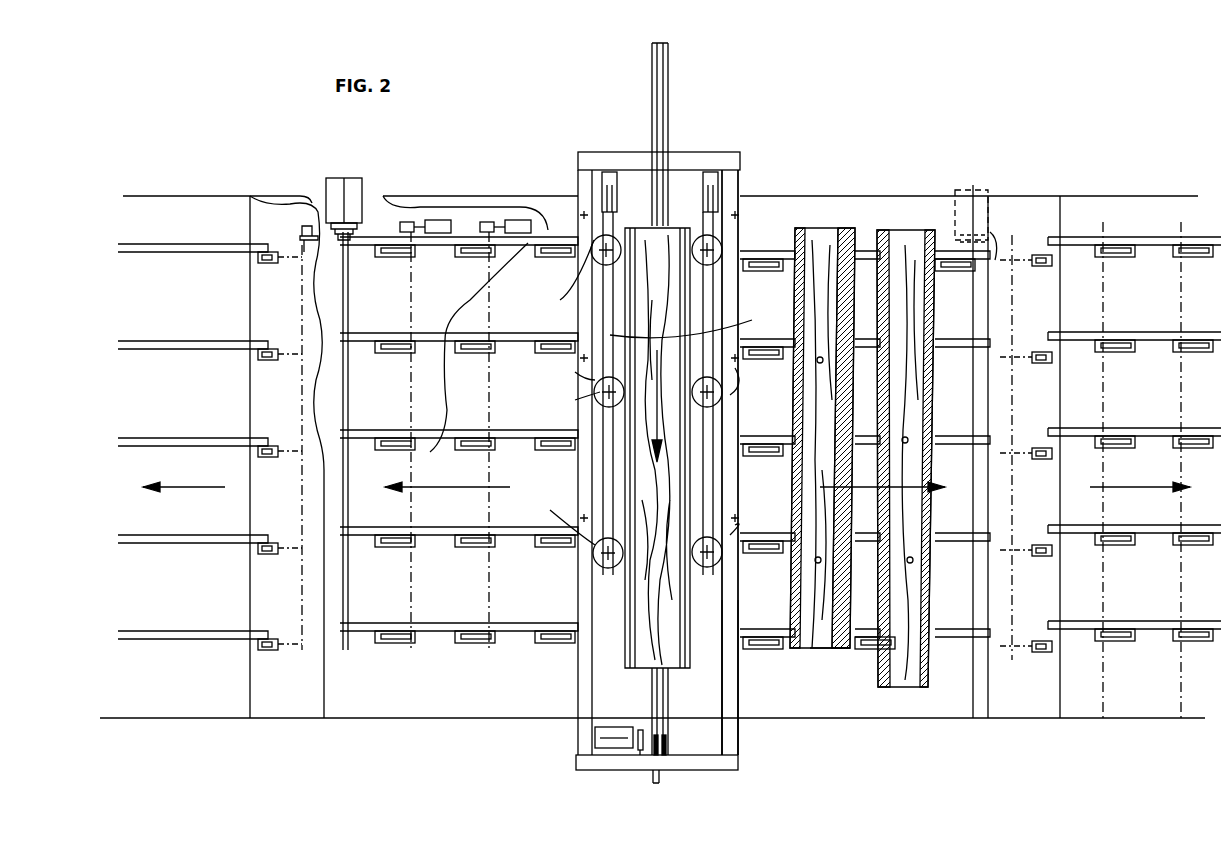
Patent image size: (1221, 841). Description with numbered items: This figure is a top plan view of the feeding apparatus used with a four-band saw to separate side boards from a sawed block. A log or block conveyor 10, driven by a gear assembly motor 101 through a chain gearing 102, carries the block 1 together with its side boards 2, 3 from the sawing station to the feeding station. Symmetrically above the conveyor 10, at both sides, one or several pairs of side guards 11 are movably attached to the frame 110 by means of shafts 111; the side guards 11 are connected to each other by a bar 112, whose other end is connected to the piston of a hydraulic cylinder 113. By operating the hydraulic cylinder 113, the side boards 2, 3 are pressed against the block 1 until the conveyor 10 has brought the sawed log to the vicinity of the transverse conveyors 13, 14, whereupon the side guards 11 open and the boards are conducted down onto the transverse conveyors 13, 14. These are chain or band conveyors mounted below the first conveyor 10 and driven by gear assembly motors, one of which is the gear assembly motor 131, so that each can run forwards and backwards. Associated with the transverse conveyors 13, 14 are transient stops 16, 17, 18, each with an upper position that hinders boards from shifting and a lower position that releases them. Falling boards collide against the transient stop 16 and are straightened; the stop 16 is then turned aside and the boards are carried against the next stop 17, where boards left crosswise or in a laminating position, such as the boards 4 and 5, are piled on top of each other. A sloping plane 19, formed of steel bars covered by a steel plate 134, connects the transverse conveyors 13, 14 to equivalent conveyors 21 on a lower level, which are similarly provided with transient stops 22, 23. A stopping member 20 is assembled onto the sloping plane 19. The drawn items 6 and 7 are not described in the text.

The block 1 is at (630, 190).
The side board 2 is at (683, 198).
The side board 3 is at (738, 192).
The board 4 is at (855, 248).
The board 5 is at (808, 248).
The support bracket 6 is at (940, 250).
The log 7 is at (912, 240).
The log or block conveyor 10 is at (657, 95).
The side guards 11 is at (580, 240).
The transverse conveyor 13 is at (515, 628).
The transverse conveyor 14 is at (875, 640).
The transient stop 16 is at (770, 248).
The transient stop 17 is at (868, 250).
The transient stop 18 is at (965, 245).
The sloping plane 19 is at (1013, 215).
The stopping member 20 is at (1036, 250).
The conveyors 21 is at (1080, 237).
The transient stop 22 is at (1135, 245).
The transient stop 23 is at (1205, 245).
The gear assembly motor 101 is at (595, 738).
The chain gearing 102 is at (640, 755).
The frame 110 is at (733, 660).
The shafts 111 is at (585, 322).
The bar 112 is at (735, 324).
The hydraulic cylinder 113 is at (610, 170).
The gear assembly motor 131 is at (356, 185).
The steel plate 134 is at (284, 712).